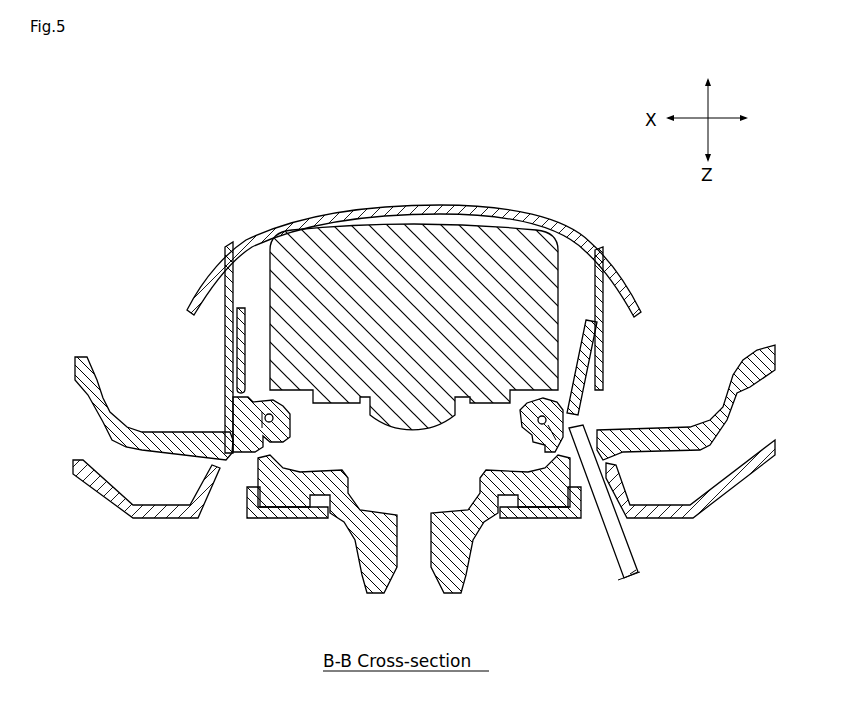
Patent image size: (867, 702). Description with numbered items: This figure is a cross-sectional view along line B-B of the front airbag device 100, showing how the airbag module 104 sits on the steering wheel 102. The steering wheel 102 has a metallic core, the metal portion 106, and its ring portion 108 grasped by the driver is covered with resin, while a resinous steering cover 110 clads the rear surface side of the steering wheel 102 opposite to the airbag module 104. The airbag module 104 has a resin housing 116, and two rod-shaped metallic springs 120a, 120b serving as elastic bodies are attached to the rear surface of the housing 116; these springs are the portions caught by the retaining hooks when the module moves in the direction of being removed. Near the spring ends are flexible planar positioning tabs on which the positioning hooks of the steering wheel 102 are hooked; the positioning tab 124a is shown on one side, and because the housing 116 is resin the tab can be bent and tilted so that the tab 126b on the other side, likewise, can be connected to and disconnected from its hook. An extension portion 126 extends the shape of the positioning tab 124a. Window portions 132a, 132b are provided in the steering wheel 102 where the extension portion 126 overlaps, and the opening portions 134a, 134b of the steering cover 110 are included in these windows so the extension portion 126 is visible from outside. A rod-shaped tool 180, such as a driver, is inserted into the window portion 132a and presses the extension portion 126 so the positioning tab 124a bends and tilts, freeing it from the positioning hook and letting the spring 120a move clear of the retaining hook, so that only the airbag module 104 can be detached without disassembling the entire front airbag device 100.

The front airbag device 100 is at (230, 175).
The steering wheel 102 is at (786, 296).
The airbag module 104 is at (226, 250).
The metal portion 106 is at (720, 375).
The ring portion 108 is at (556, 213).
The steering cover 110 is at (770, 438).
The housing 116 is at (347, 402).
The spring 120a is at (525, 440).
The spring 120b is at (284, 432).
The positioning tab 124a is at (582, 400).
The extension portion 126 is at (547, 460).
The positioning tab 126b is at (240, 422).
The window portion 132a is at (604, 537).
The window portion 132b is at (246, 530).
The opening portion 134a is at (578, 510).
The opening portion 134b is at (250, 510).
The tool 180 is at (640, 553).